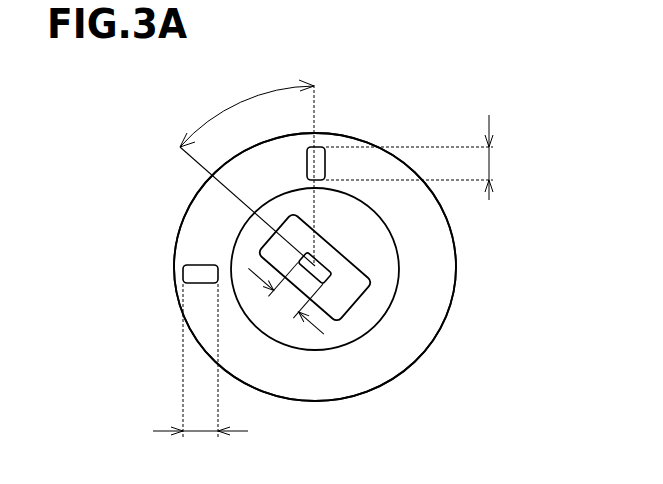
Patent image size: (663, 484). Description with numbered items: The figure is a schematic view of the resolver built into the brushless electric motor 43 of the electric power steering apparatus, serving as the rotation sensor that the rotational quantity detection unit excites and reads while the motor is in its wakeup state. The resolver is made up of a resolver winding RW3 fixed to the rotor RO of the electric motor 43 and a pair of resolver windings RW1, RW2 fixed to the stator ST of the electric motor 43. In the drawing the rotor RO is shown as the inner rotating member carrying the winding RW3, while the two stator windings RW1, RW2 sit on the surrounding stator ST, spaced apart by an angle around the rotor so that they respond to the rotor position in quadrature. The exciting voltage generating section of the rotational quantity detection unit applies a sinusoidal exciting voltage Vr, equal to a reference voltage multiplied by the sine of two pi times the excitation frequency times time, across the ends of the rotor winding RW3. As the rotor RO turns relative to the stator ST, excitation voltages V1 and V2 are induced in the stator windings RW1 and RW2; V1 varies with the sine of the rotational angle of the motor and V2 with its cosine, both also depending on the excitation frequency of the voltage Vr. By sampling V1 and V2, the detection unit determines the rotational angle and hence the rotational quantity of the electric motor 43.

The electric motor 43 is at (137, 203).
The stator ST is at (422, 322).
The rotor RO is at (347, 300).
The resolver winding RW1 is at (325, 164).
The resolver winding RW2 is at (183, 272).
The resolver winding RW3 is at (328, 268).
The excitation voltage V1 is at (428, 157).
The excitation voltage V2 is at (200, 374).
The sinusoidal exciting voltage Vr is at (295, 290).